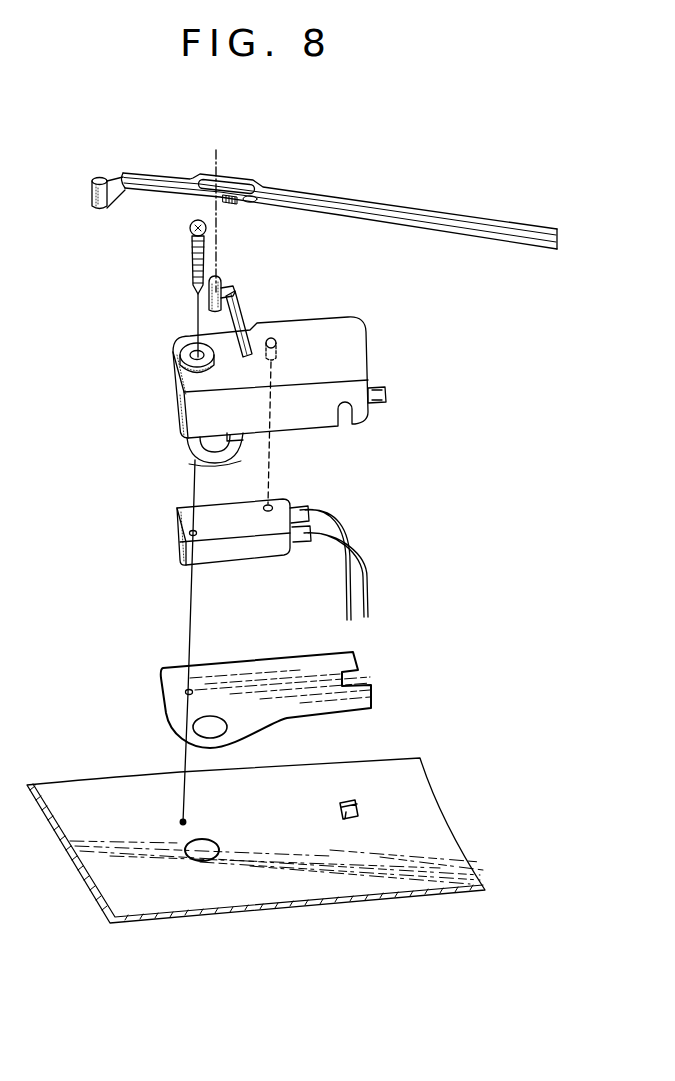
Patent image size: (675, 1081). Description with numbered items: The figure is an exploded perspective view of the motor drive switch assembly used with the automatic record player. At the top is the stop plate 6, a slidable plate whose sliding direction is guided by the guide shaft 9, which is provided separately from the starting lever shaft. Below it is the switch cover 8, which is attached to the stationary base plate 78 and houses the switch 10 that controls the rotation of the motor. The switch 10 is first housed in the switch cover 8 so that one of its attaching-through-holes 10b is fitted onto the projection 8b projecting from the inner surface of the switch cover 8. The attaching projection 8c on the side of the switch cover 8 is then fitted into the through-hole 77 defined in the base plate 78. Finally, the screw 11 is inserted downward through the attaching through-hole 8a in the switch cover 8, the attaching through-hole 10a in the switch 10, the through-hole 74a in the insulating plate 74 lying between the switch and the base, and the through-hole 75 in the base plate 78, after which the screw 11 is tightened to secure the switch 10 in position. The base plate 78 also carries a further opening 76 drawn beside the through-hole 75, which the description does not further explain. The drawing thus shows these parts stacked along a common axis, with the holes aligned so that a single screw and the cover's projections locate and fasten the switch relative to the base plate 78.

The stop plate 6 is at (417, 208).
The switch cover 8 is at (176, 402).
The attaching through-hole 8a is at (177, 354).
The projection 8b is at (282, 340).
The attaching projection 8c is at (394, 390).
The guide shaft 9 is at (241, 293).
The switch 10 is at (238, 558).
The attaching through-hole 10a is at (188, 535).
The attaching-through-hole 10b is at (298, 490).
The screw 11 is at (190, 251).
The insulating plate 74 is at (178, 722).
The through-hole 74a is at (183, 692).
The through-hole 75 is at (182, 822).
The base plate opening 76 is at (208, 848).
The through-hole 77 is at (352, 820).
The base plate 78 is at (283, 891).